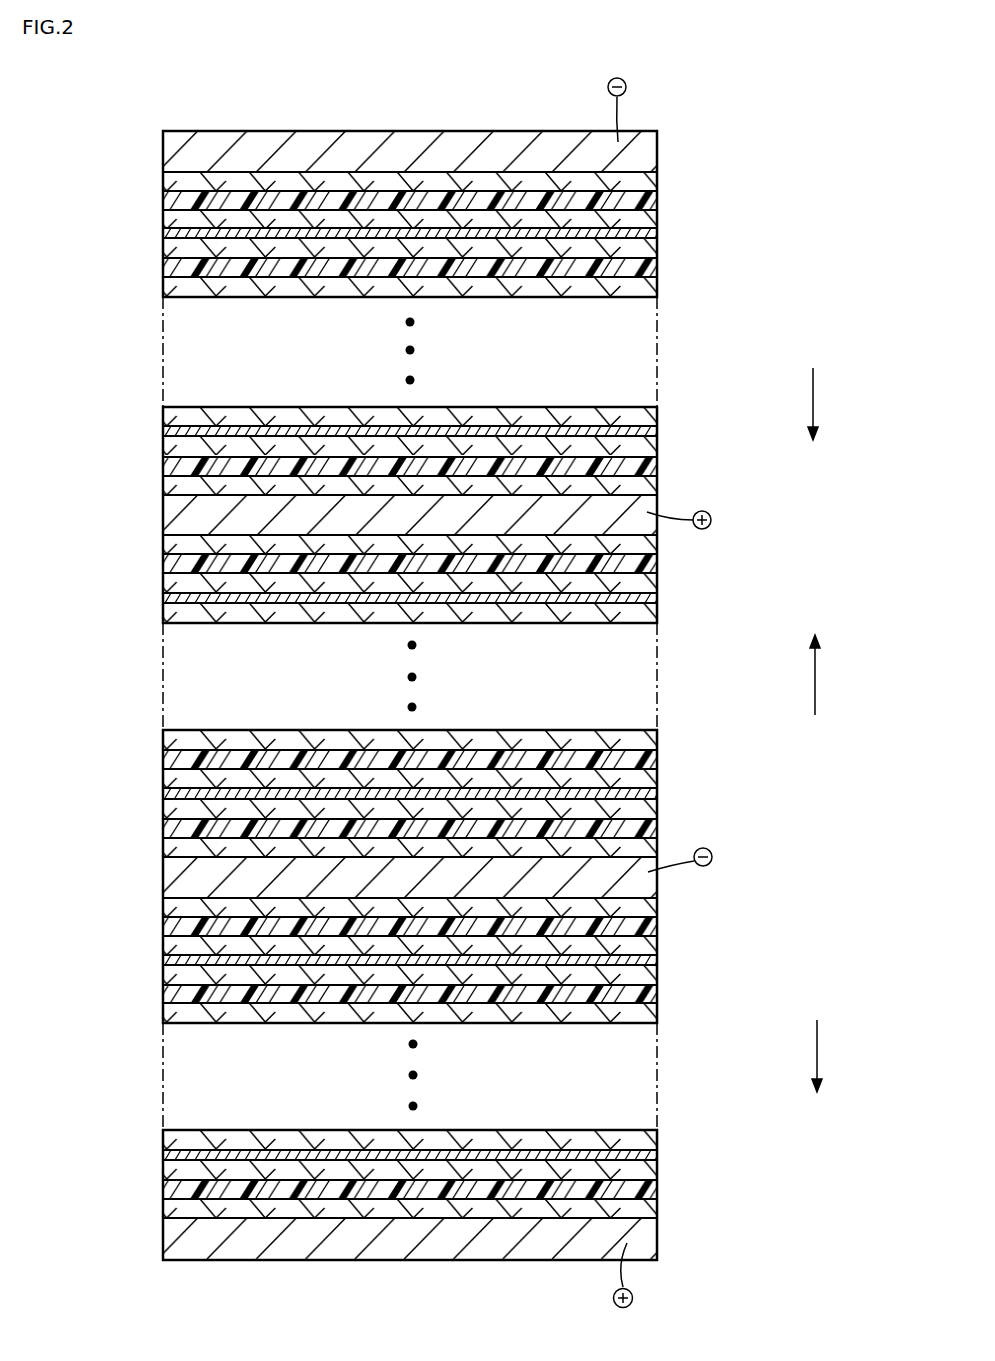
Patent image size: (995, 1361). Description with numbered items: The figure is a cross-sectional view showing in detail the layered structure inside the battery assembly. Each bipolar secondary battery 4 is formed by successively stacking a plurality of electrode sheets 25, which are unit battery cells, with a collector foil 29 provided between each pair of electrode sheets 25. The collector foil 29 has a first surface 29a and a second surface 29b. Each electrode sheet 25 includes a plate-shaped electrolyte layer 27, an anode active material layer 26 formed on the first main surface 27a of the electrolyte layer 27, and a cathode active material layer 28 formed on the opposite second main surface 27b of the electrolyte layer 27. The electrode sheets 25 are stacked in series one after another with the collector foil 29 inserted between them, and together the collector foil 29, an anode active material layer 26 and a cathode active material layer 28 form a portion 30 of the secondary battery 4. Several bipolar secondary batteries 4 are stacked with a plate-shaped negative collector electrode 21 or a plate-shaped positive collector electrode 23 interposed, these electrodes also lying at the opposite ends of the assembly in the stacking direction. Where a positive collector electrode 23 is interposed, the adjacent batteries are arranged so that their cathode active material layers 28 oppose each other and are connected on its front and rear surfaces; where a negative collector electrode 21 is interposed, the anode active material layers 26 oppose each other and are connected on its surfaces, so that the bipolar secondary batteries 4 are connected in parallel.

The bipolar secondary battery 4 is at (160, 174).
The negative collector electrode 21 is at (180, 880).
The positive collector electrode 23 is at (648, 1236).
The electrode sheet 25 is at (716, 1223).
The anode active material layer 26 is at (630, 1165).
The electrolyte layer 27 is at (630, 1185).
The first main surface 27a is at (553, 257).
The second main surface 27b is at (585, 278).
The cathode active material layer 28 is at (630, 1205).
The collector foil 29 is at (645, 795).
The first surface 29a is at (645, 762).
The second surface 29b is at (645, 826).
The portion of secondary battery 30 is at (724, 640).